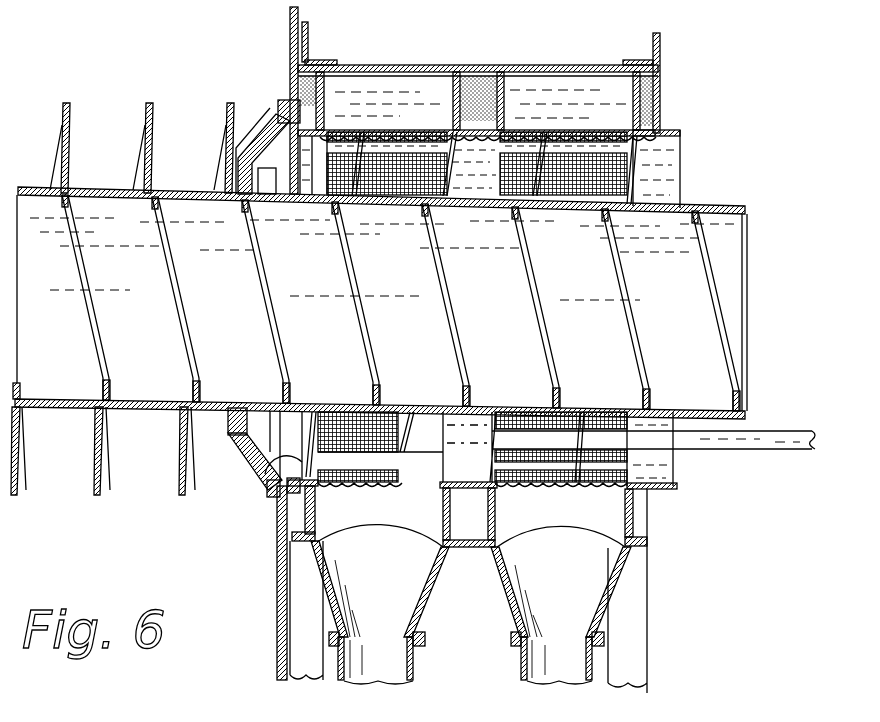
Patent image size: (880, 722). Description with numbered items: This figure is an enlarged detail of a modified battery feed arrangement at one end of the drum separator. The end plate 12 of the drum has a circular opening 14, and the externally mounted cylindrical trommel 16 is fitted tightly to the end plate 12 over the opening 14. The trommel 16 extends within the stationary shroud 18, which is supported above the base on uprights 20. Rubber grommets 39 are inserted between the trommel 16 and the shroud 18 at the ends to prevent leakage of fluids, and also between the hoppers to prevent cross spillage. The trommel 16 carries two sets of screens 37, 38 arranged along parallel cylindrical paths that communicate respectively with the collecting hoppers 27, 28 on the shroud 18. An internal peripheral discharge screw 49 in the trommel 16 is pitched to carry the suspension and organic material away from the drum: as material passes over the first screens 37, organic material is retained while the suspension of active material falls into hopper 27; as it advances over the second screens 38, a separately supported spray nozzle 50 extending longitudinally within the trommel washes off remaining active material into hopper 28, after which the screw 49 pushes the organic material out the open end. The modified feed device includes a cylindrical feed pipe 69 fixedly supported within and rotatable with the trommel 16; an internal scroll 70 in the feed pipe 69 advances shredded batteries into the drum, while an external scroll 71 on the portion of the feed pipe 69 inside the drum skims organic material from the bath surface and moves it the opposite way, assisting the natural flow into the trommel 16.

The end plate 12 is at (290, 20).
The circular opening 14 is at (262, 458).
The trommel 16 is at (671, 131).
The shroud 18 is at (547, 66).
The uprights 20 is at (660, 46).
The collecting hopper 27 is at (416, 576).
The collecting hopper 28 is at (545, 603).
The screens 37 is at (357, 419).
The screens 38 is at (568, 410).
The rubber grommets 39 is at (322, 80).
The internal peripheral discharge screw 49 is at (632, 173).
The spray nozzle 50 is at (750, 448).
The cylindrical feed pipe 69 is at (714, 206).
The internal scroll 70 is at (450, 337).
The external scroll 71 is at (143, 118).